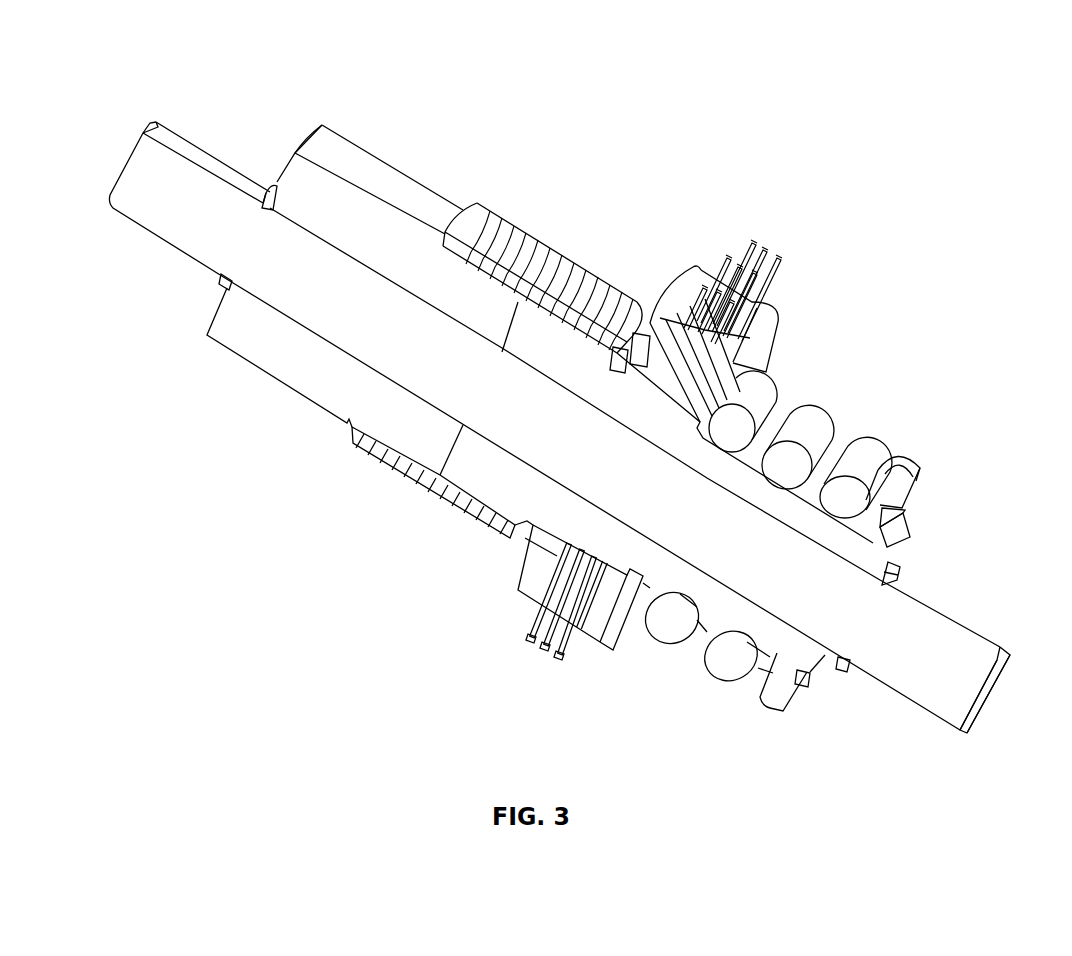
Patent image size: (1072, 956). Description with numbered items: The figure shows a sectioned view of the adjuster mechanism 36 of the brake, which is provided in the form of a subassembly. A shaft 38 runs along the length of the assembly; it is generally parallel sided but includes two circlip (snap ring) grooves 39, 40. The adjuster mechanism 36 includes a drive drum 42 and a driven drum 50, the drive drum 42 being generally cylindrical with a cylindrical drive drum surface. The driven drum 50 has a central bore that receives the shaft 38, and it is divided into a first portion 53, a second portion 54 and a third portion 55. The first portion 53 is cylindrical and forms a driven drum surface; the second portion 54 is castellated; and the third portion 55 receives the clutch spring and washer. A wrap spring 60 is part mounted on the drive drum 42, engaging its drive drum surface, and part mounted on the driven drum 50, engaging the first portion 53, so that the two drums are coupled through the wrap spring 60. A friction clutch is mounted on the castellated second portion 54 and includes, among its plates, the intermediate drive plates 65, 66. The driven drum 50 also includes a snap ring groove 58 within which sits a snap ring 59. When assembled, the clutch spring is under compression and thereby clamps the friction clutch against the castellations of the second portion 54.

The adjuster mechanism 36 is at (422, 545).
The shaft 38 is at (990, 687).
The circlip groove 39 is at (269, 184).
The circlip groove 40 is at (883, 590).
The drive drum 42 is at (350, 168).
The driven drum 50 is at (580, 377).
The first portion 53 is at (580, 325).
The second portion 54 is at (788, 238).
The third portion 55 is at (828, 396).
The snap ring groove 58 is at (877, 538).
The snap ring 59 is at (813, 682).
The wrap spring 60 is at (520, 245).
The intermediate drive plate 65 is at (552, 610).
The intermediate drive plate 66 is at (560, 607).